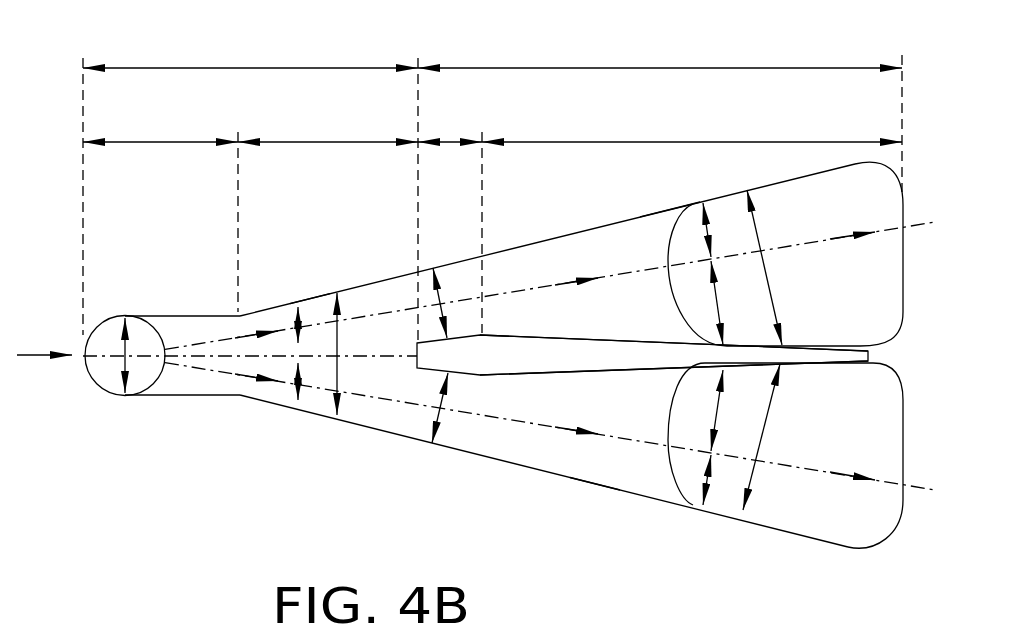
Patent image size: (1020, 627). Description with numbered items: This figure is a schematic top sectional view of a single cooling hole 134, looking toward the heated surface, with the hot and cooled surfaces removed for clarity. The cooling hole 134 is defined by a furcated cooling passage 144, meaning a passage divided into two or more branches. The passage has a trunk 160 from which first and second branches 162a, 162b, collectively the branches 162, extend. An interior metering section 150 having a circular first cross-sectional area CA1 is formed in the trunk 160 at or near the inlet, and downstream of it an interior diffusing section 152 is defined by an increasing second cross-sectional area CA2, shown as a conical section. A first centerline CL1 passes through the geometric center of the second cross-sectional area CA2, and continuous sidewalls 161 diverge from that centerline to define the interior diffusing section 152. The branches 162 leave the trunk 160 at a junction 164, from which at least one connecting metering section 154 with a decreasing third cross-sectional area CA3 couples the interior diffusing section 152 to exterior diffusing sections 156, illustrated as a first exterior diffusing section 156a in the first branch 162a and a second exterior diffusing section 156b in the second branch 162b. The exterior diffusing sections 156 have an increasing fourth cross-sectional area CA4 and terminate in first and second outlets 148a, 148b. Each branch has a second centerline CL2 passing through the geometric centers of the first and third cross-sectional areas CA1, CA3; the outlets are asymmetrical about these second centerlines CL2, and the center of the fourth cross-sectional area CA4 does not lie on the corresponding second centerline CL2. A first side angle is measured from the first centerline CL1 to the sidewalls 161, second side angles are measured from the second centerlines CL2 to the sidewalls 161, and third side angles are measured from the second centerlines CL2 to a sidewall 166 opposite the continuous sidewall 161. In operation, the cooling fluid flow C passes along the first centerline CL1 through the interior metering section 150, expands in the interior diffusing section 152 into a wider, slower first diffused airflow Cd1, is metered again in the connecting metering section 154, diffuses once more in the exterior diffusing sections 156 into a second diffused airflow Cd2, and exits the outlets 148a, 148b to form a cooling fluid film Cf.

The cooling hole 134 is at (668, 197).
The furcated cooling passage 144 is at (324, 380).
The first outlet 148a is at (790, 245).
The second outlet 148b is at (808, 447).
The interior metering section 150 is at (145, 142).
The interior diffusing section 152 is at (318, 142).
The connecting metering section 154 is at (452, 142).
The exterior diffusing sections 156 is at (640, 142).
The first exterior diffusing section 156a is at (555, 323).
The second exterior diffusing section 156b is at (553, 414).
The trunk 160 is at (224, 68).
The sidewalls 161 is at (308, 298).
The branches 162 is at (648, 68).
The first branch 162a is at (592, 224).
The second branch 162b is at (544, 470).
The junction 164 is at (417, 362).
The sidewall 166 is at (630, 341).
The cooling fluid flow C is at (36, 358).
The first centerline CL1 is at (195, 358).
The second centerlines CL2 is at (389, 312).
The first cross-sectional area CA1 is at (122, 346).
The second cross-sectional area CA2 is at (345, 412).
The third cross-sectional area CA3 is at (437, 293).
The fourth cross-sectional area CA4 is at (770, 290).
The first diffused airflow Cd1 is at (258, 335).
The second diffused airflow Cd2 is at (550, 282).
The cooling fluid film Cf is at (830, 232).